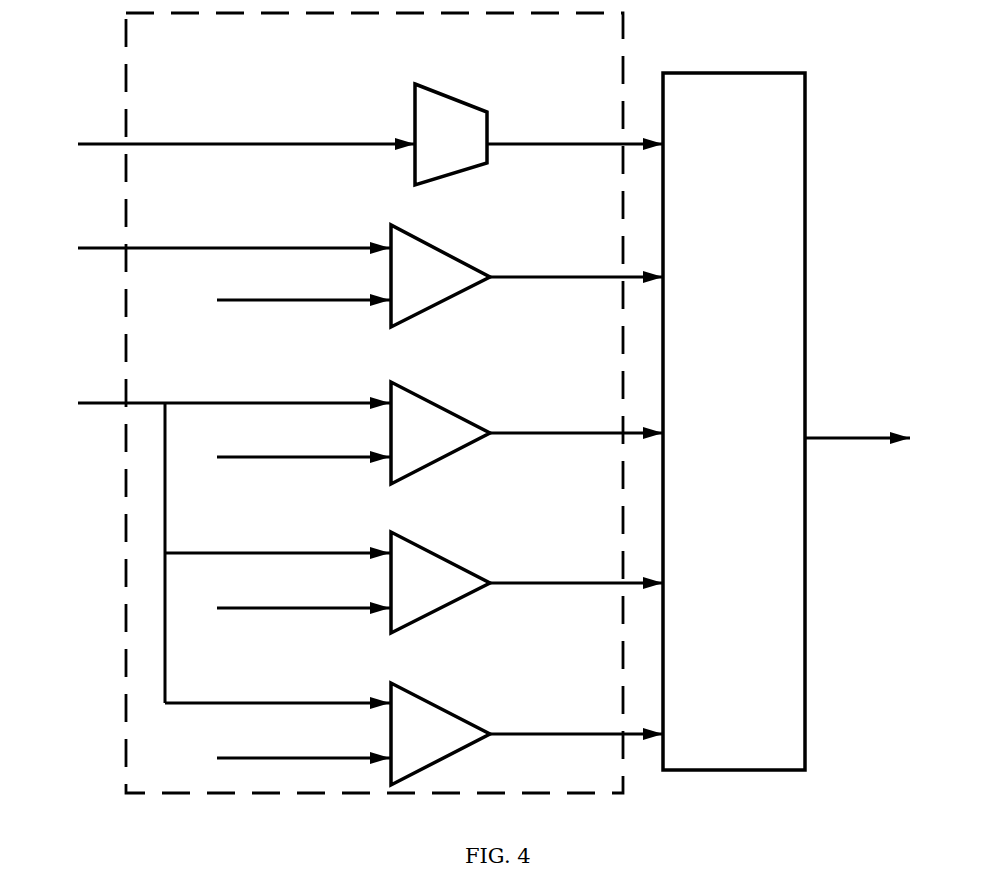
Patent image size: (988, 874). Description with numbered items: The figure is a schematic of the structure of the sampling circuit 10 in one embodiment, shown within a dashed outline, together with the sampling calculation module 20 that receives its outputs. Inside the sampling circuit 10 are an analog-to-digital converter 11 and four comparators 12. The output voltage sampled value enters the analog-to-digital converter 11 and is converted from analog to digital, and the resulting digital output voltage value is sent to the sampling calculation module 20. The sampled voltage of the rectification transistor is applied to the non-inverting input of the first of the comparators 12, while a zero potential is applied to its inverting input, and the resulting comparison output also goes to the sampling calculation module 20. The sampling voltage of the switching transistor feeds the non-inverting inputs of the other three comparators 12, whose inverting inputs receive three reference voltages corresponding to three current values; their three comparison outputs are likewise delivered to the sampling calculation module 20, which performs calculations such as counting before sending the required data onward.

The sampling circuit 10 is at (369, 403).
The analog-to-digital converter 11 is at (451, 134).
The comparators 12 is at (440, 505).
The sampling calculation module 20 is at (805, 150).